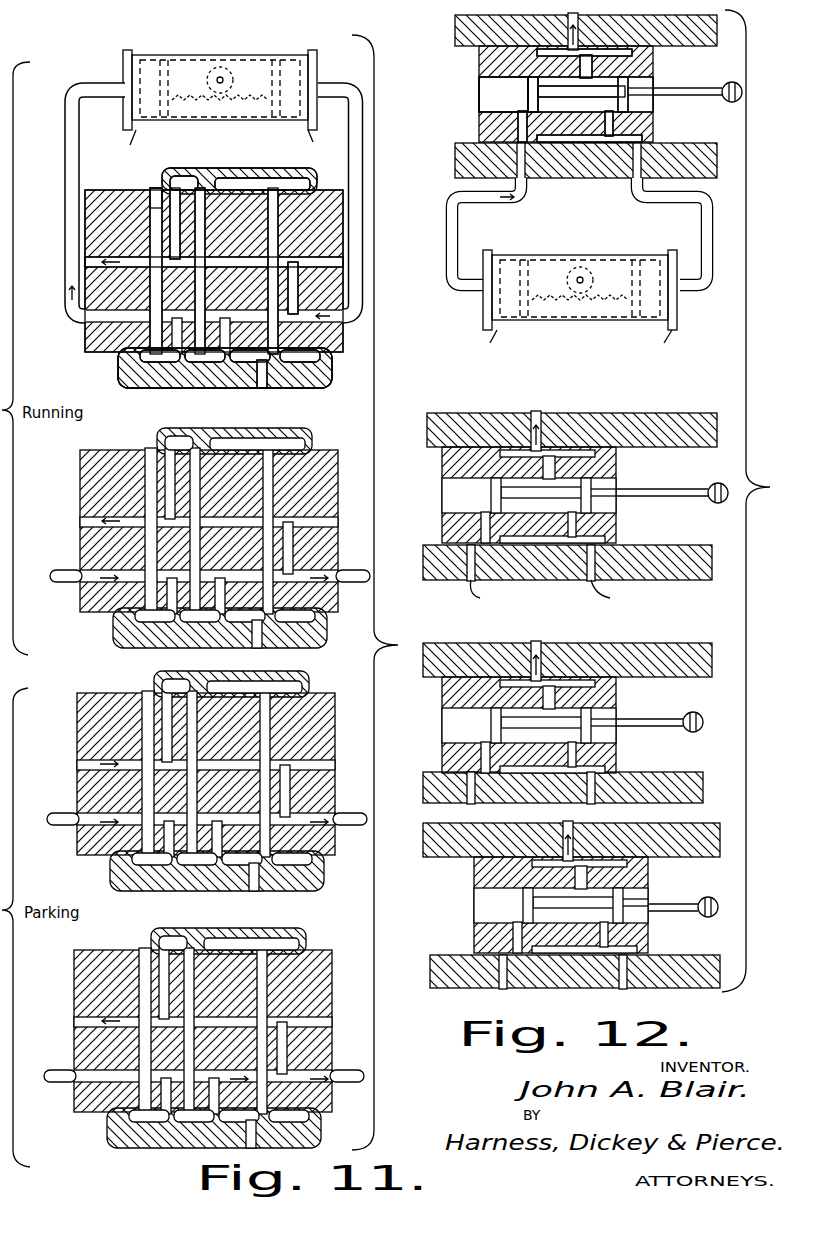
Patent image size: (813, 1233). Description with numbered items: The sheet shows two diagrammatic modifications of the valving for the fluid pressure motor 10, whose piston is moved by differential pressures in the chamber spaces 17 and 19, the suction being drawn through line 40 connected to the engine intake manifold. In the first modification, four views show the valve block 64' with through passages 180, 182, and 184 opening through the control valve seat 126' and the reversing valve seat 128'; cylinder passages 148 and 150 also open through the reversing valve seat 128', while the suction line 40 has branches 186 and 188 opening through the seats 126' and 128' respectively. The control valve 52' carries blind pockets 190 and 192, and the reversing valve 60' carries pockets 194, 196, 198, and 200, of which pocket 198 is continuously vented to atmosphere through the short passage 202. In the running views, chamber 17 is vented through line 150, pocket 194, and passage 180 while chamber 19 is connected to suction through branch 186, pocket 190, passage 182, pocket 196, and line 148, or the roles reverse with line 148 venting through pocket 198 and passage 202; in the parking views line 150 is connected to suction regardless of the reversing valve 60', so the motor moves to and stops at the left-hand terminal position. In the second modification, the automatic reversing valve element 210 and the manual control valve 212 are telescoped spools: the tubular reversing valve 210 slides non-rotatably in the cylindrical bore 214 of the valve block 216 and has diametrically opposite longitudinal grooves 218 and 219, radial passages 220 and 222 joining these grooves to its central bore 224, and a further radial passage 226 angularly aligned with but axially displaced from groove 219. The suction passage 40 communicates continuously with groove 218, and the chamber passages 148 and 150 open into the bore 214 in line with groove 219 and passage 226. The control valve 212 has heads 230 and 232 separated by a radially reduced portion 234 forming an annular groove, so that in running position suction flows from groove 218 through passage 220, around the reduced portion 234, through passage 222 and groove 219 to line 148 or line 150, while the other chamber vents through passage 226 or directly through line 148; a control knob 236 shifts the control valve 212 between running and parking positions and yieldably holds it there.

In FIG. 11, the motor 10 is at (214, 53).
In FIG. 12, the motor 10 is at (579, 328).
In FIG. 11, the chamber space 17 is at (130, 145).
In FIG. 12, the chamber space 17 is at (501, 342).
In FIG. 11, the chamber space 19 is at (319, 141).
In FIG. 12, the chamber space 19 is at (658, 340).
In FIG. 11, the suction line 40 is at (82, 260).
In FIG. 12, the suction line 40 is at (566, 28).
In FIG. 11, the control valve 52' is at (239, 165).
In FIG. 11, the reversing valve 60' is at (232, 377).
In FIG. 11, the valve block 64' is at (214, 271).
In FIG. 11, the control valve seat 126' is at (125, 187).
In FIG. 11, the reversing valve seat 128' is at (243, 368).
In FIG. 11, the cylinder passage 148 is at (364, 168).
In FIG. 12, the cylinder passage 148 is at (708, 230).
In FIG. 11, the cylinder passage 150 is at (65, 185).
In FIG. 12, the cylinder passage 150 is at (450, 230).
In FIG. 11, the through passage 180 is at (152, 288).
In FIG. 11, the through passage 182 is at (205, 290).
In FIG. 11, the through passage 184 is at (278, 235).
In FIG. 11, the branch passage 186 is at (178, 220).
In FIG. 11, the branch passage 188 is at (297, 292).
In FIG. 11, the control valve pocket 190 is at (185, 180).
In FIG. 11, the control valve pocket 192 is at (252, 178).
In FIG. 11, the reversing valve pocket 194 is at (160, 362).
In FIG. 11, the reversing valve pocket 196 is at (205, 362).
In FIG. 11, the reversing valve pocket 198 is at (250, 362).
In FIG. 11, the reversing valve pocket 200 is at (298, 362).
In FIG. 11, the short passage 202 is at (262, 390).
In FIG. 12, the reversing valve element 210 is at (660, 85).
In FIG. 12, the control valve 212 is at (541, 94).
In FIG. 12, the cylindrical bore 214 is at (680, 52).
In FIG. 12, the valve block 216 is at (712, 38).
In FIG. 12, the groove 218 is at (630, 54).
In FIG. 12, the groove 219 is at (570, 145).
In FIG. 12, the radial passage 220 is at (578, 70).
In FIG. 12, the radial passage 222 is at (613, 130).
In FIG. 12, the central bore 224 is at (490, 100).
In FIG. 12, the radial passage 226 is at (518, 125).
In FIG. 12, the head 230 is at (526, 104).
In FIG. 12, the head 232 is at (628, 105).
In FIG. 12, the radially reduced portion 234 is at (528, 100).
In FIG. 12, the control knob 236 is at (742, 100).